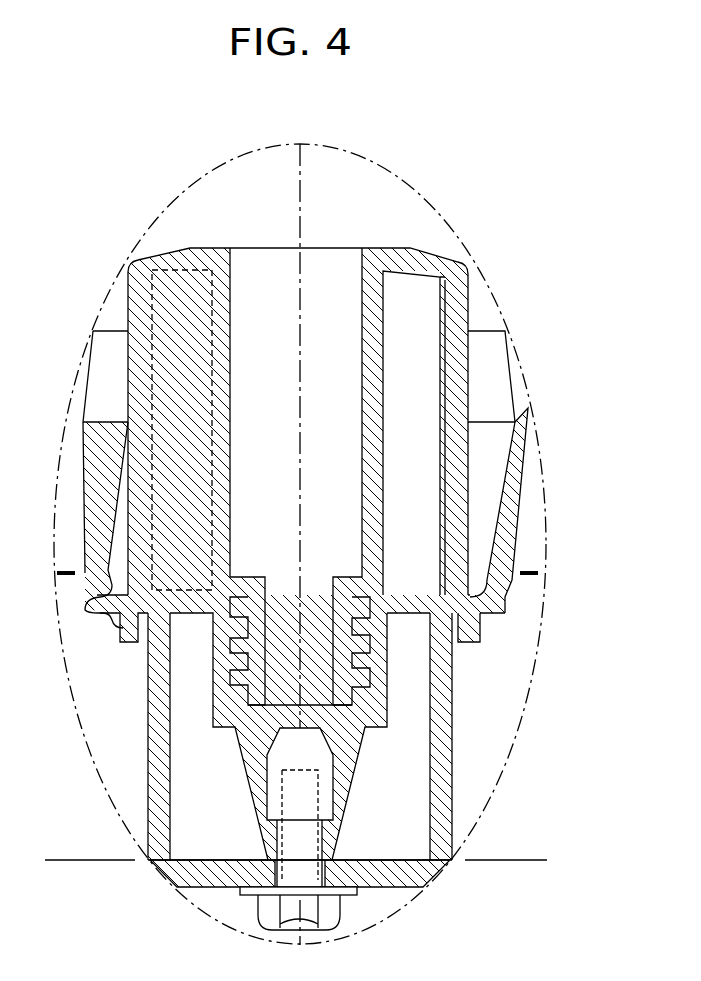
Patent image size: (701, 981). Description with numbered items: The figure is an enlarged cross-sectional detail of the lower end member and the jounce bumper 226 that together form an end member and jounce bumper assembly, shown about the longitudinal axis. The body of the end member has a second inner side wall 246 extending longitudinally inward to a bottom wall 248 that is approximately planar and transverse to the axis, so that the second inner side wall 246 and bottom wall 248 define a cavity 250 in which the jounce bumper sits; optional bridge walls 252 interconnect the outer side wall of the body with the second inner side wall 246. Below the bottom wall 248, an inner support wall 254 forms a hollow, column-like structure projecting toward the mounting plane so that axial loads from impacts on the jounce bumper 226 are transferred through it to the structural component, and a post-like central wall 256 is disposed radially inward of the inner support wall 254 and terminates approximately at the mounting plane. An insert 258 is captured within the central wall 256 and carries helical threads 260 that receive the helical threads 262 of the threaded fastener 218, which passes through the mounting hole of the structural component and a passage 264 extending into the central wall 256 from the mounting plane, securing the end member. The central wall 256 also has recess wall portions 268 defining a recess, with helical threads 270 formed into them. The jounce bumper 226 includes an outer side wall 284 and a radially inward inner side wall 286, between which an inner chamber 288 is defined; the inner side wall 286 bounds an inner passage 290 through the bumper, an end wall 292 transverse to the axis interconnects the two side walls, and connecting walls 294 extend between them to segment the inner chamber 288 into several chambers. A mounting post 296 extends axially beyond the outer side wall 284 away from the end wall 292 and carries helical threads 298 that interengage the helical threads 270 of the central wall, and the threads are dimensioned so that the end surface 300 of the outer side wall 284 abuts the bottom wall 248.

The threaded fastener 218 is at (265, 918).
The jounce bumper 226 is at (120, 350).
The second inner side wall 246 is at (522, 460).
The bottom wall 248 is at (410, 607).
The cavity 250 is at (107, 398).
The bridge walls 252 is at (73, 600).
The inner support wall 254 is at (447, 790).
The central wall 256 is at (340, 737).
The insert 258 is at (320, 784).
The helical threads 260 is at (325, 803).
The helical threads 262 is at (285, 830).
The passage 264 is at (287, 832).
The recess wall portions 268 is at (230, 683).
The helical threads 270 is at (233, 663).
The outer side wall 284 is at (463, 398).
The inner side wall 286 is at (380, 442).
The inner chamber 288 is at (418, 382).
The inner passage 290 is at (265, 285).
The end wall 292 is at (407, 258).
The connecting walls 294 is at (178, 277).
The mounting post 296 is at (332, 630).
The helical threads 298 is at (368, 695).
The end surface 300 is at (460, 588).